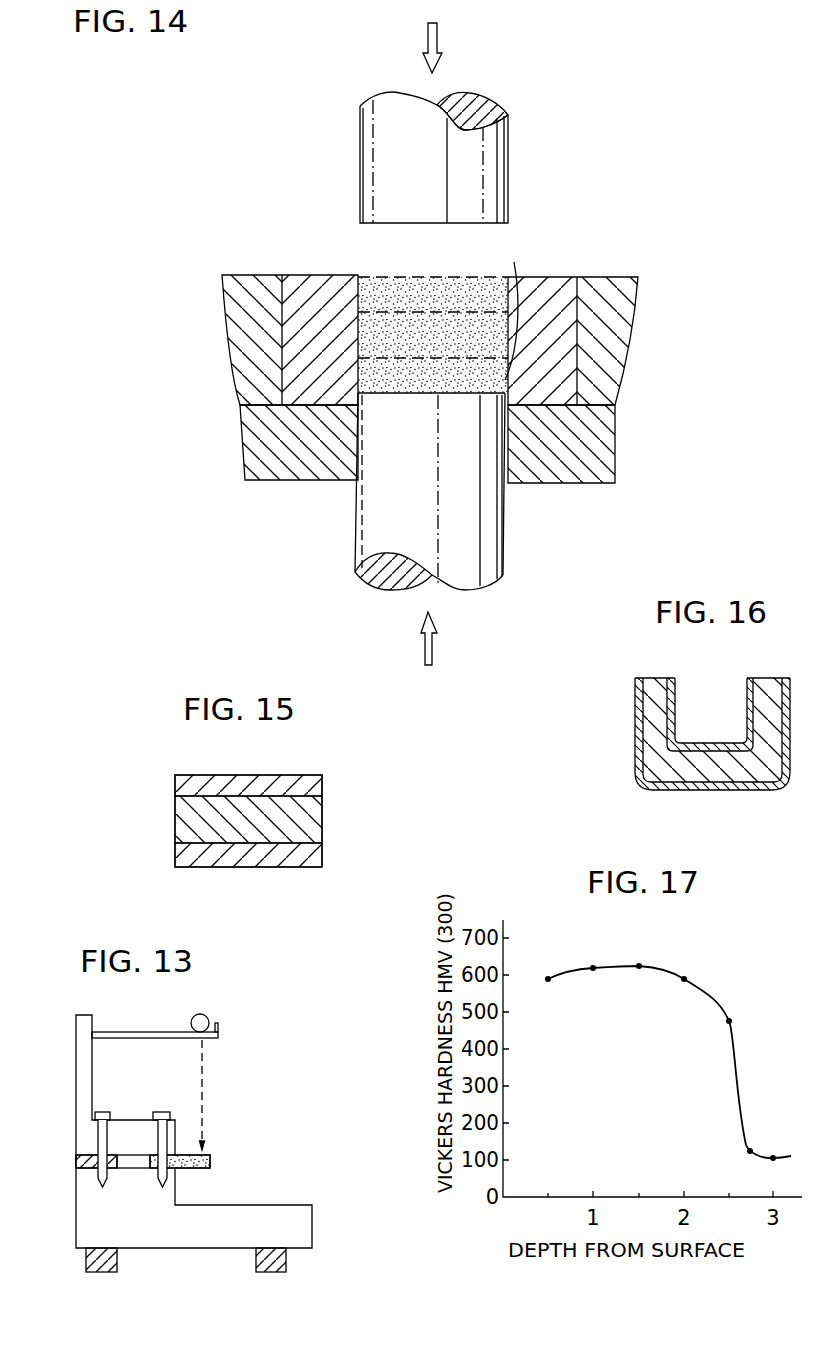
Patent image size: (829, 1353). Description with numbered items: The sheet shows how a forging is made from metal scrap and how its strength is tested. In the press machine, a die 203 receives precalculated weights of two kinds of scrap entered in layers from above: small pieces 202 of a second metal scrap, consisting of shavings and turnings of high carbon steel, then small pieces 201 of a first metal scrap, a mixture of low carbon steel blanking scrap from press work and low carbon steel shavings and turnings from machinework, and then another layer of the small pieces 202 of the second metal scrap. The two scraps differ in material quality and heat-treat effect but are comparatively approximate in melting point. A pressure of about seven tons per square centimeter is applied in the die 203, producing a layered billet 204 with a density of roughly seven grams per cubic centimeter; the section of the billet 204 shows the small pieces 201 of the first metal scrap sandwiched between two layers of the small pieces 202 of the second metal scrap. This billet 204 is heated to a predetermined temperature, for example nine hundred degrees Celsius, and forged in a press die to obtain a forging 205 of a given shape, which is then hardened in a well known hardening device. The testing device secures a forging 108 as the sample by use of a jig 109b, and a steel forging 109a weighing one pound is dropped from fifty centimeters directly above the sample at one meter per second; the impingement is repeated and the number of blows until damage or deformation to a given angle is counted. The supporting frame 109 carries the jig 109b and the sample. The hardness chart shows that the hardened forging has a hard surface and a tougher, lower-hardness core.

In FIG. 13, the forging 108 is at (210, 1160).
In FIG. 13, the bending test jig frame 109 is at (76, 1175).
In FIG. 13, the steel forging 109a is at (208, 1018).
In FIG. 13, the jig 109b is at (174, 1132).
In FIG. 14, the small pieces of first metal scrap 201 is at (372, 318).
In FIG. 15, the small pieces of first metal scrap 201 is at (318, 815).
In FIG. 14, the small pieces of second metal scrap 202 is at (492, 288).
In FIG. 15, the small pieces of second metal scrap 202 is at (322, 783).
In FIG. 14, the die 203 is at (566, 290).
In FIG. 15, the billet 204 is at (287, 845).
In FIG. 16, the forging 205 is at (685, 791).